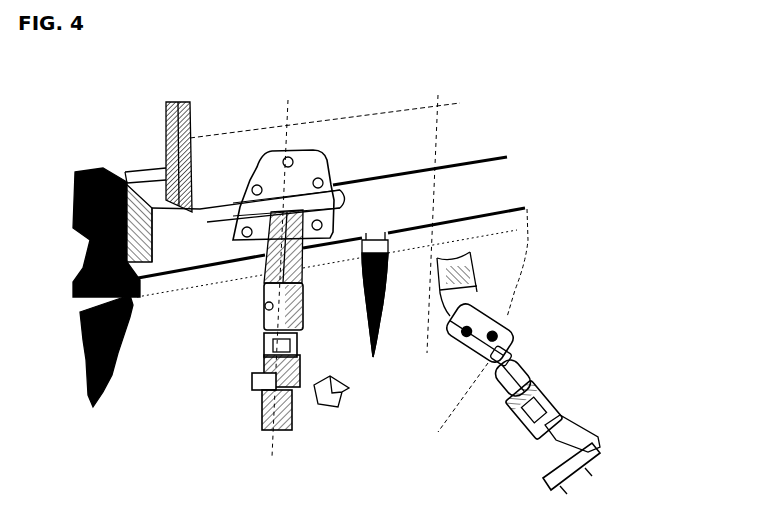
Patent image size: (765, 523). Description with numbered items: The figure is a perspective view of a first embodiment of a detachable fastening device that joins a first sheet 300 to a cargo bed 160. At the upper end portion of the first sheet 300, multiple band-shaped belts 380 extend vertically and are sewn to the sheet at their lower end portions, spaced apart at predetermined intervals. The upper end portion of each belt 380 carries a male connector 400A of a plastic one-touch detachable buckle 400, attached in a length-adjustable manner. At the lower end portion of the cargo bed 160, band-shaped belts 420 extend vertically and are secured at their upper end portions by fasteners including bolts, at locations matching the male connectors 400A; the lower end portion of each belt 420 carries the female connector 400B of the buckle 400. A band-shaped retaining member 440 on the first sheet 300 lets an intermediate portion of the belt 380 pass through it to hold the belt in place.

The cargo bed 160 is at (497, 183).
The first sheet 300 is at (515, 252).
The belt 420 is at (300, 238).
The plastic one-touch detachable buckle 400 is at (258, 327).
The retaining member 440 is at (253, 381).
The belt 380 is at (262, 421).
The female connector 400B is at (507, 330).
The male connector 400A is at (547, 390).